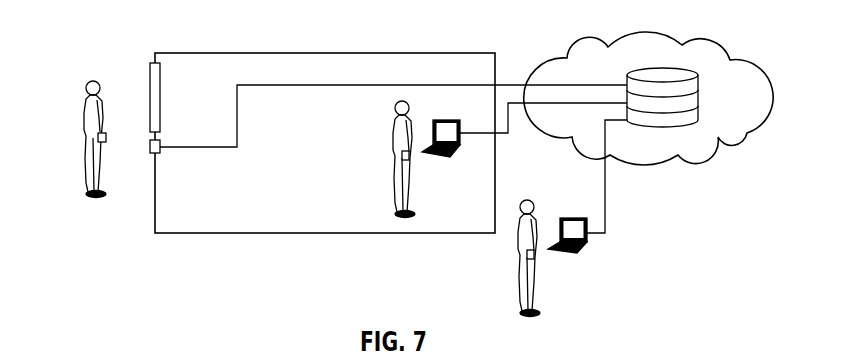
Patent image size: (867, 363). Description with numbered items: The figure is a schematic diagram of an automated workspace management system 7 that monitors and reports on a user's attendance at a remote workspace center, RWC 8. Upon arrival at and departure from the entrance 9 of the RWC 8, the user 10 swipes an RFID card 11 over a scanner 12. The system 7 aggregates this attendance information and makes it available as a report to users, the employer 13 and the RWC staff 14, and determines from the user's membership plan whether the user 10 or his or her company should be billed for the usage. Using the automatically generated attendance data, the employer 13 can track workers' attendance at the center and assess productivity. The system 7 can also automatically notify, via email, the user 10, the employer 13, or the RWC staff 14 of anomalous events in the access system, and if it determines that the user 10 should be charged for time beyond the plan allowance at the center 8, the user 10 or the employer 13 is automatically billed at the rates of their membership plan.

The automated workspace management system 7 is at (647, 30).
The remote workspace center 8 is at (180, 52).
The entrance 9 is at (163, 100).
The user 10 is at (90, 82).
The RFID card 11 is at (106, 145).
The scanner 12 is at (160, 154).
The employer 13 is at (518, 237).
The RWC staff 14 is at (393, 140).